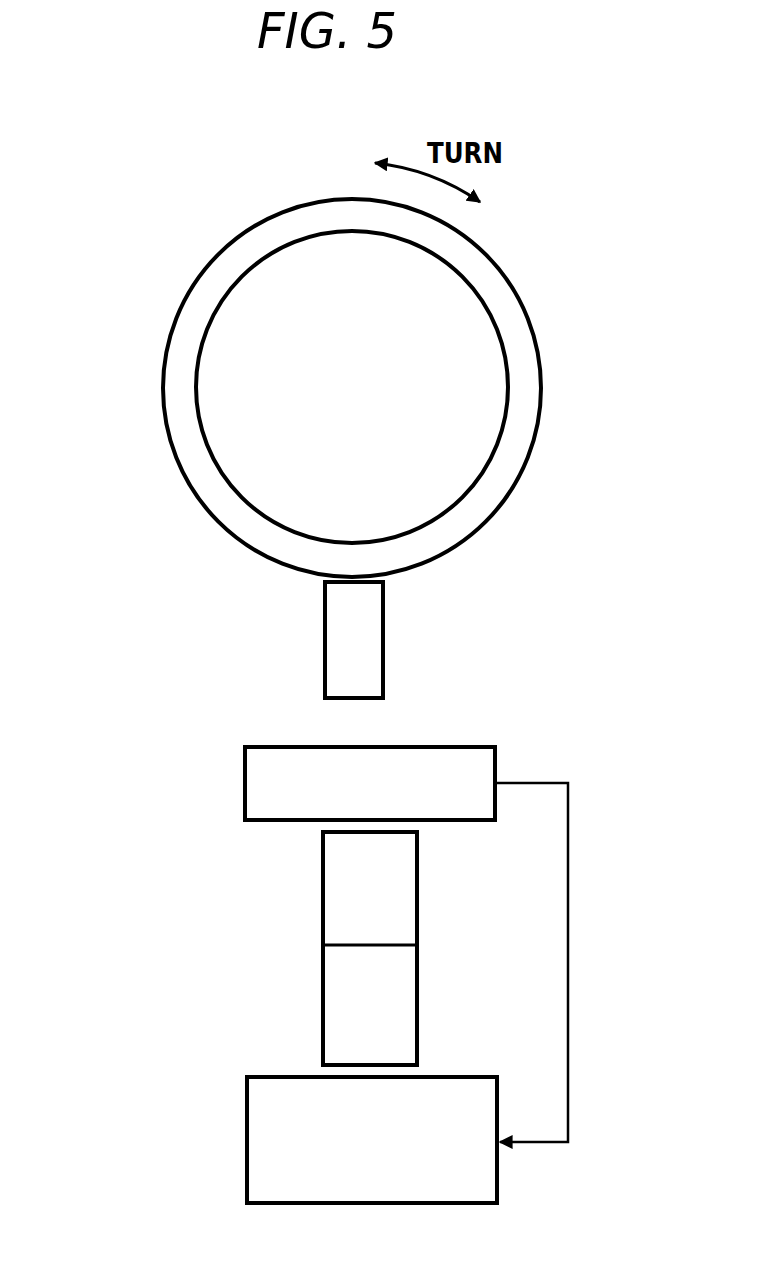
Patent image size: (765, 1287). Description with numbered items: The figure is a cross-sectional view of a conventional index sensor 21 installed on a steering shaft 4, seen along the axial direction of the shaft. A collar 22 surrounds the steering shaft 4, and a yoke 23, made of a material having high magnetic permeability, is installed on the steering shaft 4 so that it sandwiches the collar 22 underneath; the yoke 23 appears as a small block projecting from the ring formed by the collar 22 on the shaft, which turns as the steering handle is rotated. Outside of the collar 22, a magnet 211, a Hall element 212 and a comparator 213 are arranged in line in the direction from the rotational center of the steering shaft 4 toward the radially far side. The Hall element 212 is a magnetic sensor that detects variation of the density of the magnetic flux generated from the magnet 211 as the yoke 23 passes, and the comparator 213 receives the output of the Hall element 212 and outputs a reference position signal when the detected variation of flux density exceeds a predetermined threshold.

The steering shaft 4 is at (267, 290).
The index sensor 21 is at (112, 618).
The collar 22 is at (507, 275).
The yoke 23 is at (384, 620).
The magnet 211 is at (323, 943).
The Hall element 212 is at (245, 778).
The comparator 213 is at (247, 1138).